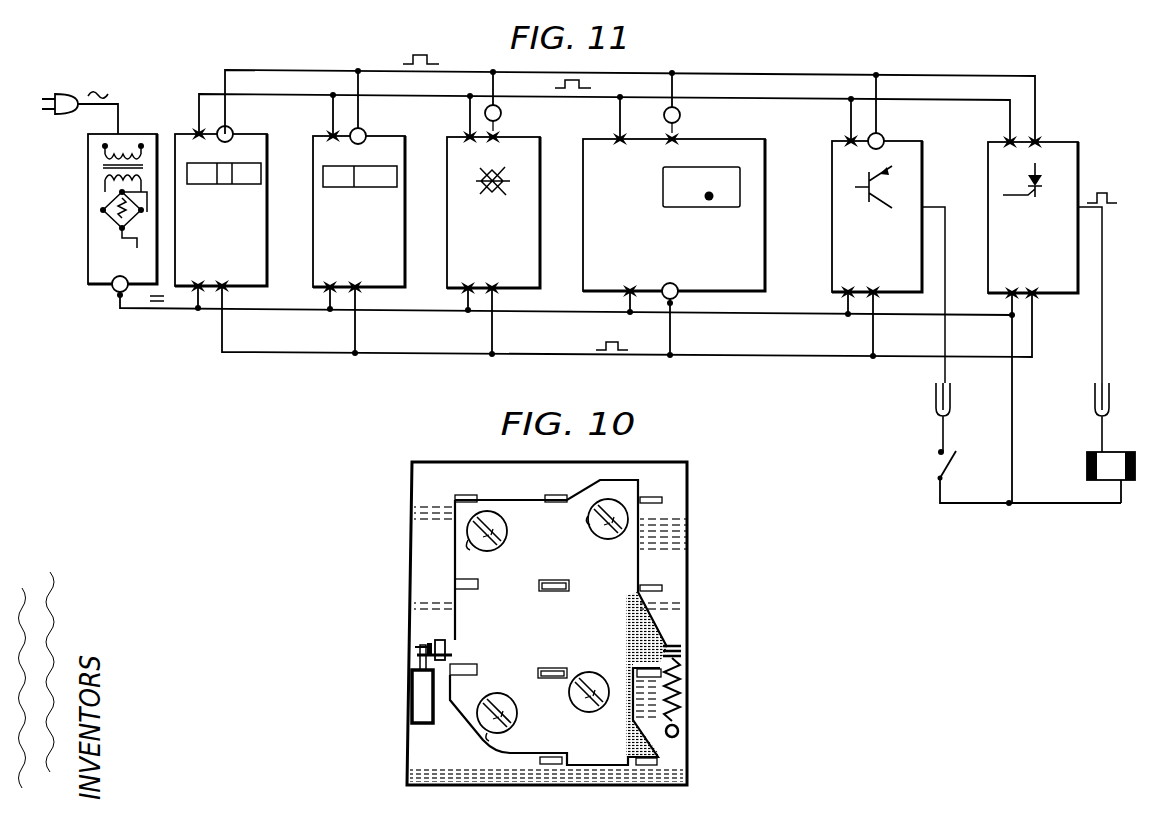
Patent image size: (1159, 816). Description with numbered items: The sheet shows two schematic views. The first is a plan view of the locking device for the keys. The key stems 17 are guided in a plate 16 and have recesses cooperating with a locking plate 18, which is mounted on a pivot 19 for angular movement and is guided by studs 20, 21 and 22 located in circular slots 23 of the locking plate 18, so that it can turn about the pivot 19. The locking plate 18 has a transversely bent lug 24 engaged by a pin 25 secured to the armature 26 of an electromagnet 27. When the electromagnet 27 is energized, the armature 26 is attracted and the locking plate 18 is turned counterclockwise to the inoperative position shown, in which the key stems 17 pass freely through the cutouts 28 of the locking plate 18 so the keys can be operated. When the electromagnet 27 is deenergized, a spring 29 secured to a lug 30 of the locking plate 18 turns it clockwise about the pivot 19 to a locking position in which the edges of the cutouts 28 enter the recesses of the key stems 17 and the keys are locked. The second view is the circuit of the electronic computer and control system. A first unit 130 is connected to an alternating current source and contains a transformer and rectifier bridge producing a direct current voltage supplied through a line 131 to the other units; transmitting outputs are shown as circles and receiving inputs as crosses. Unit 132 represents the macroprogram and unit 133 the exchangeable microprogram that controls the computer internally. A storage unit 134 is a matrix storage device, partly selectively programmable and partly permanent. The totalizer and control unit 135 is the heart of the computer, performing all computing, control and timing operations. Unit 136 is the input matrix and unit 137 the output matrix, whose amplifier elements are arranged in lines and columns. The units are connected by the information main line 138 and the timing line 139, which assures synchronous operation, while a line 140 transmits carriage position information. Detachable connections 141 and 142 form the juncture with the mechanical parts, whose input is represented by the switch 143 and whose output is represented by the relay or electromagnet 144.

In FIG. 10, the plate 16 is at (672, 553).
In FIG. 10, the key stems 17 is at (465, 494).
In FIG. 10, the locking plate 18 is at (520, 507).
In FIG. 10, the pivot 19 is at (600, 672).
In FIG. 10, the stud 20 is at (505, 544).
In FIG. 10, the stud 21 is at (497, 692).
In FIG. 10, the stud 22 is at (598, 540).
In FIG. 10, the circular slots 23 is at (468, 540).
In FIG. 10, the transversely bent lug 24 is at (447, 644).
In FIG. 10, the pin 25 is at (428, 646).
In FIG. 10, the armature 26 is at (417, 666).
In FIG. 10, the electromagnet 27 is at (411, 700).
In FIG. 10, the cutouts 28 is at (539, 586).
In FIG. 10, the spring 29 is at (683, 690).
In FIG. 10, the lug 30 is at (682, 650).
In FIG. 11, the first unit 130 is at (138, 271).
In FIG. 11, the line 131 is at (530, 312).
In FIG. 11, the macroprogram unit 132 is at (238, 250).
In FIG. 11, the microprogram unit 133 is at (376, 250).
In FIG. 11, the storage unit 134 is at (510, 250).
In FIG. 11, the totalizer and control unit 135 is at (688, 250).
In FIG. 11, the input matrix 136 is at (893, 250).
In FIG. 11, the output matrix 137 is at (1051, 250).
In FIG. 11, the information main line 138 is at (784, 74).
In FIG. 11, the timing line 139 is at (771, 105).
In FIG. 11, the line 140 is at (748, 357).
In FIG. 11, the detachable connection 141 is at (934, 408).
In FIG. 11, the detachable connection 142 is at (1091, 404).
In FIG. 11, the switch 143 is at (958, 466).
In FIG. 11, the relay or electromagnet 144 is at (1087, 467).